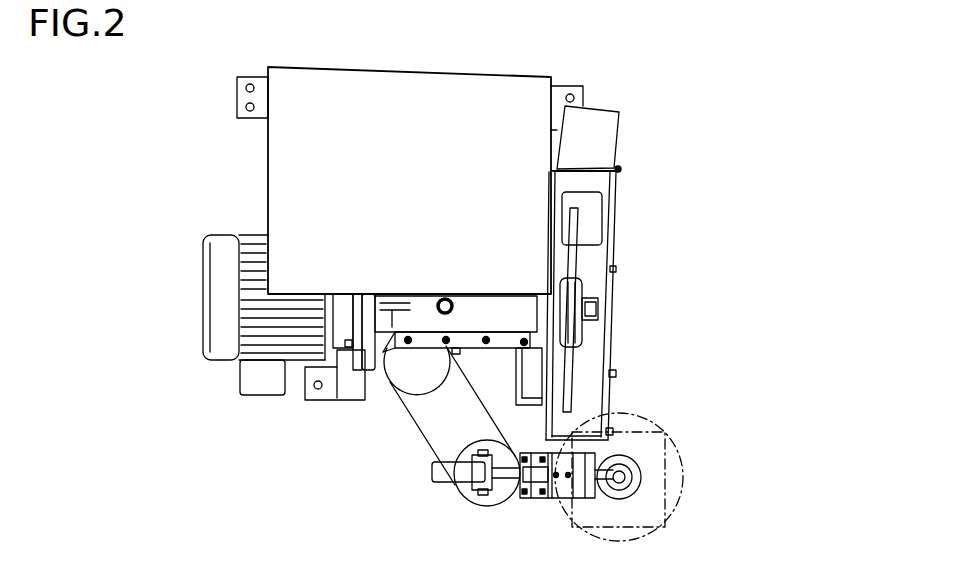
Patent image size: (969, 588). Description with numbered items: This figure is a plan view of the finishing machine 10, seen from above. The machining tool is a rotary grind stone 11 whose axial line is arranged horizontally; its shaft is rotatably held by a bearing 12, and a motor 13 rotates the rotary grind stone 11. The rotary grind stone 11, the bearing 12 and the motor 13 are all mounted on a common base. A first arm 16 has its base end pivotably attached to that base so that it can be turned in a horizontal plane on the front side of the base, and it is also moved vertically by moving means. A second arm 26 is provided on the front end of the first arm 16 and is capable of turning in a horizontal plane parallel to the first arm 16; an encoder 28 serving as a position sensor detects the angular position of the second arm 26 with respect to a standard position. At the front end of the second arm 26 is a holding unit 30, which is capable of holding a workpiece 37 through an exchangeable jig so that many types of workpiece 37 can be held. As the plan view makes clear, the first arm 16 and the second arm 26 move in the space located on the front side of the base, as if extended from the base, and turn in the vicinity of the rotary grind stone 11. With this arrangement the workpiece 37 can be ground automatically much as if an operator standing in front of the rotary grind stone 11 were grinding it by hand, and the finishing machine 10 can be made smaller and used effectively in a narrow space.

The finishing machine 10 is at (625, 130).
The rotary grind stone 11 is at (635, 297).
The bearing 12 is at (543, 303).
The motor 13 is at (216, 320).
The first arm 16 is at (426, 437).
The second arm 26 is at (559, 501).
The encoder 28 is at (410, 147).
The holding unit 30 is at (681, 460).
The workpiece 37 is at (652, 477).